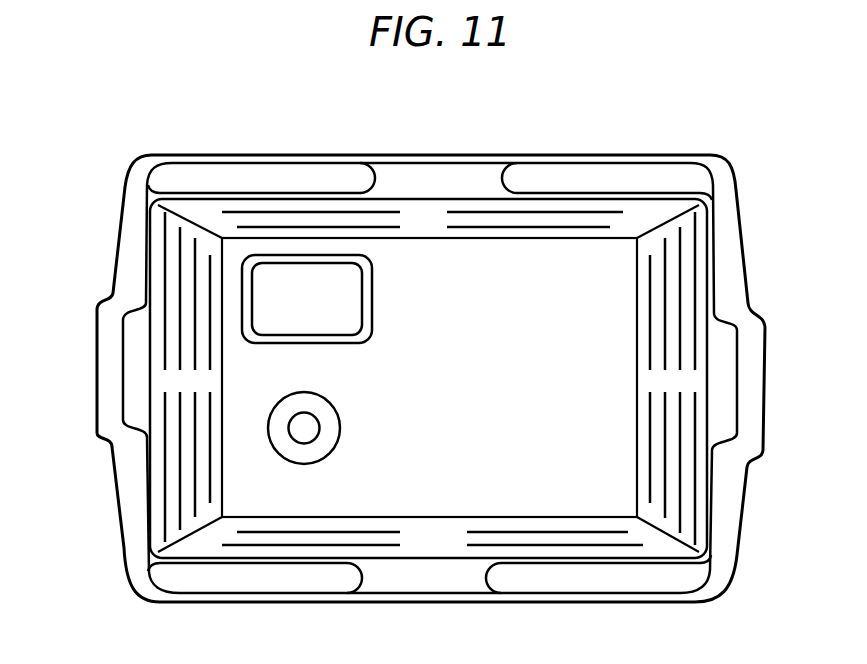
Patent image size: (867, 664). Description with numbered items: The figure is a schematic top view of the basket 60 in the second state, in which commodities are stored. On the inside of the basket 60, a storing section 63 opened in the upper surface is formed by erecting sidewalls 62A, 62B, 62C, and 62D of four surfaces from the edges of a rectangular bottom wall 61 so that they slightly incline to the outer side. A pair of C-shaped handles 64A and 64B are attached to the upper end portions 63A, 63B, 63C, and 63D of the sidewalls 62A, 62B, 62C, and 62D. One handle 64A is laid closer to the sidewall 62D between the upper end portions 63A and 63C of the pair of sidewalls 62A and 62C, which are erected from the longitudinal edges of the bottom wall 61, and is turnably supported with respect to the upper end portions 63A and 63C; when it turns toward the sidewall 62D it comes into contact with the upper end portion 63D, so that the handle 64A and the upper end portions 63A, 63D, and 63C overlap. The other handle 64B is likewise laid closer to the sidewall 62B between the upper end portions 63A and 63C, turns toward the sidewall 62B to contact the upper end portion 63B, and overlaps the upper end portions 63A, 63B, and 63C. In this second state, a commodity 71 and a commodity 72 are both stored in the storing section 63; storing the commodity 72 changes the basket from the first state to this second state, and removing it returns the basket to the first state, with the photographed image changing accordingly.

The basket 60 is at (116, 160).
The bottom wall 61 is at (452, 280).
The sidewall 62A is at (410, 224).
The sidewall 62B is at (693, 378).
The sidewall 62C is at (418, 550).
The sidewall 62D is at (157, 380).
The storing section 63 is at (470, 382).
The upper end portion 63A is at (470, 174).
The upper end portion 63B is at (743, 483).
The upper end portion 63C is at (445, 585).
The upper end portion 63D is at (117, 281).
The handle 64A is at (291, 178).
The handle 64B is at (686, 178).
The commodity 71 is at (372, 303).
The commodity 72 is at (340, 433).